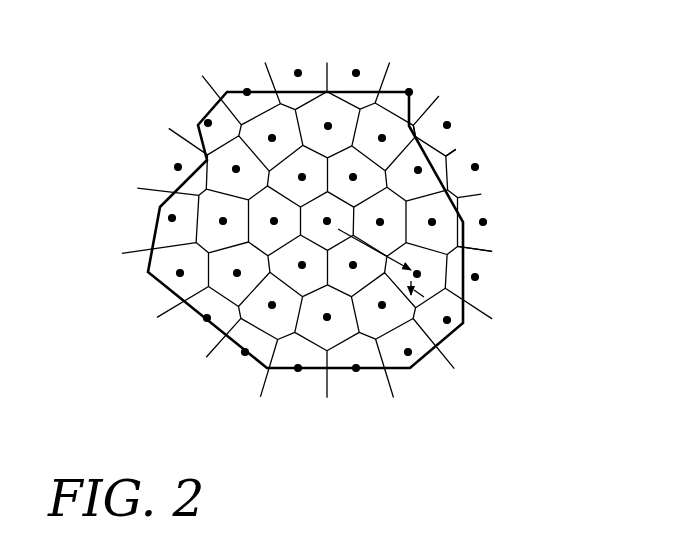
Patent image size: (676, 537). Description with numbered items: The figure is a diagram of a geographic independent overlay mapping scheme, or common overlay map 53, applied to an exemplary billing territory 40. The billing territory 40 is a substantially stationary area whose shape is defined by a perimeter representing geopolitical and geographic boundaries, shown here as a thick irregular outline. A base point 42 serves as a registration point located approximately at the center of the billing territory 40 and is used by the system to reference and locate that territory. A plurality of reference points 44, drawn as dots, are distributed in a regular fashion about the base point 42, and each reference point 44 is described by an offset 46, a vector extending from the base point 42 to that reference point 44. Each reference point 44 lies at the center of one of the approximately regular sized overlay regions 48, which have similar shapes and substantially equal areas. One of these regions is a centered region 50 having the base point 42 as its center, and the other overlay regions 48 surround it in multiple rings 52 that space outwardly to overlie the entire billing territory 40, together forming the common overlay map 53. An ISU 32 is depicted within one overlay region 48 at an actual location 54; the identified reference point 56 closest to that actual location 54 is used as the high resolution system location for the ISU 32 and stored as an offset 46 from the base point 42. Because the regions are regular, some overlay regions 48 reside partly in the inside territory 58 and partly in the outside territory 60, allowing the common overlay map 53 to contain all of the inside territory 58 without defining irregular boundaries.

The ISU 32 is at (464, 323).
The billing territory 40 is at (374, 106).
The base point 42 is at (214, 212).
The reference points 44 is at (176, 166).
The offset 46 is at (446, 246).
The regular sized overlay regions 48 is at (308, 58).
The centered region 50 is at (333, 226).
The rings 52 is at (270, 120).
The common overlay map 53 is at (170, 381).
The actual location 54 is at (425, 286).
The identified reference point 56 is at (422, 272).
The inside territory 58 is at (424, 140).
The outside territory 60 is at (438, 160).